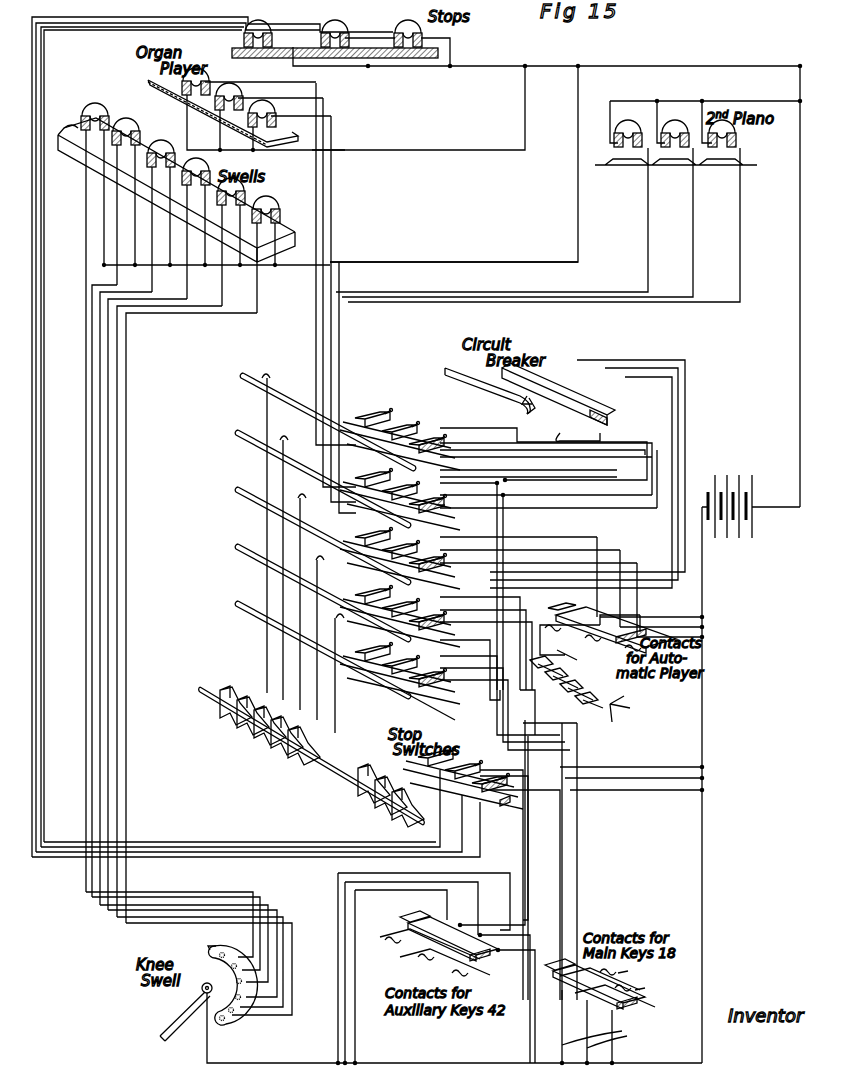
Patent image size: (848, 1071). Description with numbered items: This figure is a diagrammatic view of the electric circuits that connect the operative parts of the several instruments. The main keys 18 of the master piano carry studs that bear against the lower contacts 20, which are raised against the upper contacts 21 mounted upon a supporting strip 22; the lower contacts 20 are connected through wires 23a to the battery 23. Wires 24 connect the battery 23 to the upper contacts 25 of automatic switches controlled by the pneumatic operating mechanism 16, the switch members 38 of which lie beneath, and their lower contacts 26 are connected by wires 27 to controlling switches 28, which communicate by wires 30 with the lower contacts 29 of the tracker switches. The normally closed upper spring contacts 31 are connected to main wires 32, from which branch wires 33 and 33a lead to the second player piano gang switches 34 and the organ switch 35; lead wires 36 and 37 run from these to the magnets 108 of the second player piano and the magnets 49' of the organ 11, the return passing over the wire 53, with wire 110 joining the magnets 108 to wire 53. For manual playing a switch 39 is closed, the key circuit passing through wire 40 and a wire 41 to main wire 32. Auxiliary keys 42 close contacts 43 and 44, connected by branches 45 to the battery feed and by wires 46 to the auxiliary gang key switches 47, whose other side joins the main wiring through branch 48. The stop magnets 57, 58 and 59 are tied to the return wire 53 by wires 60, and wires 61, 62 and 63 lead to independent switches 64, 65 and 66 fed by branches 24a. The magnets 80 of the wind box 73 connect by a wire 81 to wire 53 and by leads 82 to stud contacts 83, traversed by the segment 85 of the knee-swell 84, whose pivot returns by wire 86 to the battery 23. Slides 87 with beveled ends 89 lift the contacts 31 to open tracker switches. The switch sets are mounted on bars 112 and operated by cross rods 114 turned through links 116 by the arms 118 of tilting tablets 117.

The organ 11 is at (147, 86).
The pneumatic operating mechanism 16 is at (616, 704).
The keys 18 is at (586, 1027).
The lower contact 20 is at (638, 990).
The upper contact 21 is at (618, 975).
The supporting strip 22 is at (544, 974).
The source of energy 23 is at (751, 758).
The wires 23a is at (618, 1034).
The wires 24 is at (674, 630).
The branches 24a is at (638, 787).
The upper contacts 25 is at (540, 628).
The lower contacts 26 is at (537, 638).
The wires 27 is at (637, 554).
The controlling switches 28 is at (426, 553).
The lower contacts 29 is at (516, 415).
The wires 30 is at (680, 438).
The upper spring contacts 31 is at (500, 401).
The main wires 32 is at (644, 420).
The branch wires 33 is at (556, 452).
The branch wires 33a is at (482, 483).
The second player piano gang switches 34 is at (400, 430).
The organ switch 35 is at (426, 496).
The lead wires 36 is at (405, 300).
The lead wires 37 is at (314, 300).
The automatic player contact keys 38 is at (590, 692).
The switch 39 is at (426, 613).
The wire 40 is at (570, 826).
The wire 41 is at (394, 652).
The auxiliary keys 42 is at (519, 969).
The upper contacts 43 is at (446, 968).
The lower contacts 44 is at (411, 953).
The branches 45 is at (345, 976).
The wires 46 is at (520, 846).
The auxiliary gang key switches 47 is at (422, 667).
The branch 48 is at (458, 702).
The magnets 49' is at (245, 110).
The wire 53 is at (310, 151).
The magnet 57 is at (246, 40).
The magnet 58 is at (342, 32).
The magnet 59 is at (406, 37).
The wires 60 is at (297, 68).
The wire 61 is at (118, 23).
The wire 62 is at (78, 18).
The wire 63 is at (66, 70).
The independent switch 64 is at (478, 758).
The independent switch 65 is at (482, 772).
The independent switch 66 is at (494, 806).
The wind box 73 is at (80, 159).
The magnet 80 is at (138, 132).
The wire 81 is at (438, 262).
The leads 82 is at (220, 290).
The stud contacts 83 is at (236, 949).
The knee-swell 84 is at (180, 1008).
The segment 85 is at (210, 950).
The wire 86 is at (208, 1048).
The slides 87 is at (467, 391).
The beveled ends 89 is at (503, 417).
The magnet 108 is at (618, 150).
The wire 110 is at (760, 96).
The strips or bars 112 is at (378, 416).
The cross rods 114 is at (296, 420).
The links 116 is at (266, 408).
The tilting tablets 117 is at (270, 746).
The arms 118 is at (274, 697).